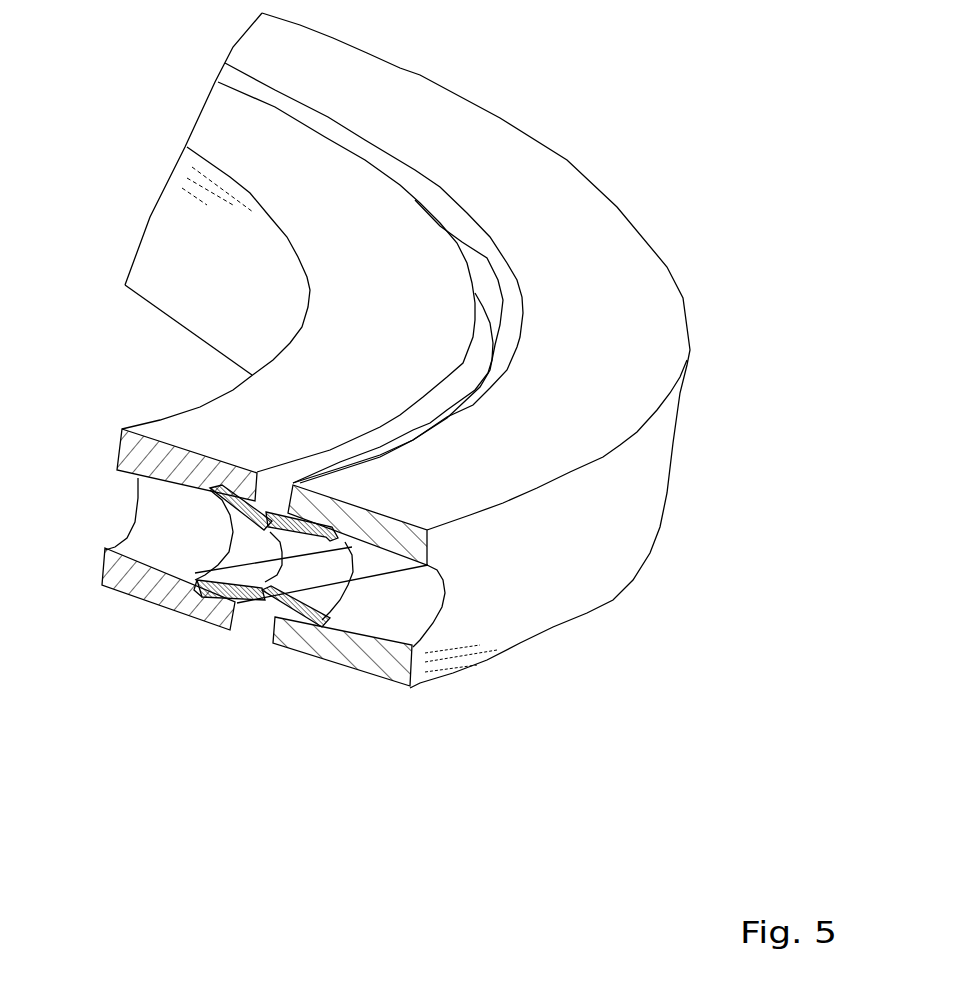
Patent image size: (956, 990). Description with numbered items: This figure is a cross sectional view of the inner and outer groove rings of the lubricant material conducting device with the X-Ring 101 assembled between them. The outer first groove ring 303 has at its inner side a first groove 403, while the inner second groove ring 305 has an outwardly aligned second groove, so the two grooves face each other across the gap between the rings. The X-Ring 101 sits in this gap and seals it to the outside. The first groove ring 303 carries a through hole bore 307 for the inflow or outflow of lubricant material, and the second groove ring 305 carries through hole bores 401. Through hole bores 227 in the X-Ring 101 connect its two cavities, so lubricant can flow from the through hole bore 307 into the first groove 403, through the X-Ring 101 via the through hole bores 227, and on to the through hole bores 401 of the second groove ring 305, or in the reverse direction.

The first groove ring 303 is at (622, 318).
The first groove 403 is at (293, 485).
The through hole bore 307 is at (417, 598).
The second groove ring 305 is at (177, 263).
The through hole bores 401 is at (183, 538).
The X-Ring 101 is at (233, 597).
The through hole bores 227 is at (302, 560).